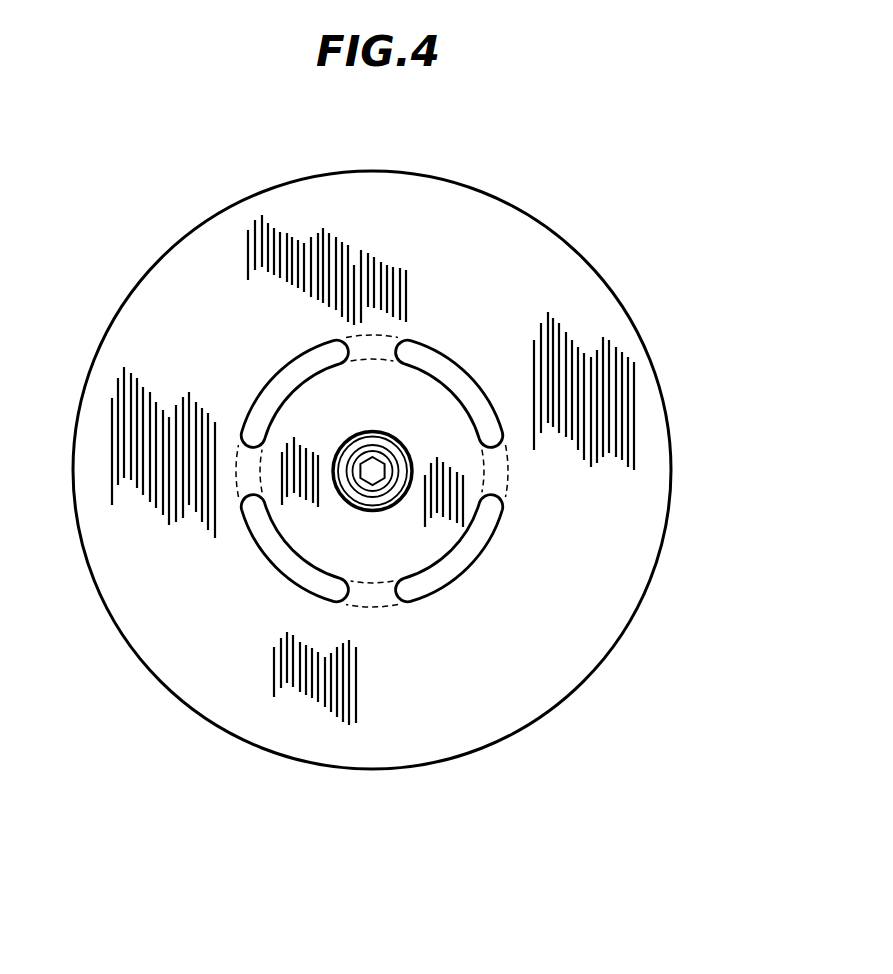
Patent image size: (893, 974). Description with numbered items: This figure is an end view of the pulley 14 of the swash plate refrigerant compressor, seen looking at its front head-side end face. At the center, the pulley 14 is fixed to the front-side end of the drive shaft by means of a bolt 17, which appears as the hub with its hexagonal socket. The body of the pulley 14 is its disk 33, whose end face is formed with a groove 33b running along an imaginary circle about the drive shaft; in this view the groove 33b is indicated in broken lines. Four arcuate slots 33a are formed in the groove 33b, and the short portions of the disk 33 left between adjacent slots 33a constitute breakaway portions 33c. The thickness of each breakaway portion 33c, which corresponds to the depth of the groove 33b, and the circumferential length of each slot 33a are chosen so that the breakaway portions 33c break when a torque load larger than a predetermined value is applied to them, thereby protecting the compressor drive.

The pulley 14 is at (518, 191).
The bolt 17 is at (372, 485).
The disk 33 is at (535, 615).
The slots 33a is at (267, 415).
The groove 33b is at (512, 467).
The breakaway portions 33c is at (367, 345).